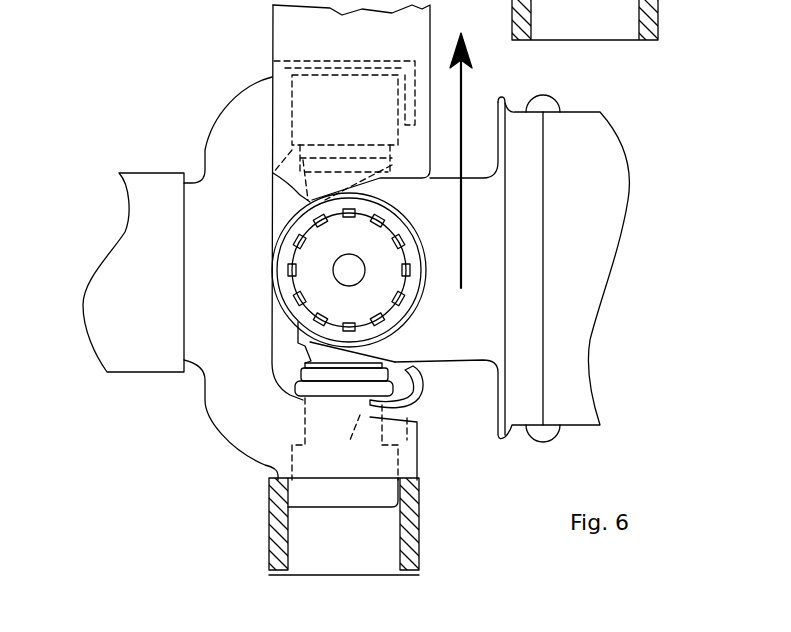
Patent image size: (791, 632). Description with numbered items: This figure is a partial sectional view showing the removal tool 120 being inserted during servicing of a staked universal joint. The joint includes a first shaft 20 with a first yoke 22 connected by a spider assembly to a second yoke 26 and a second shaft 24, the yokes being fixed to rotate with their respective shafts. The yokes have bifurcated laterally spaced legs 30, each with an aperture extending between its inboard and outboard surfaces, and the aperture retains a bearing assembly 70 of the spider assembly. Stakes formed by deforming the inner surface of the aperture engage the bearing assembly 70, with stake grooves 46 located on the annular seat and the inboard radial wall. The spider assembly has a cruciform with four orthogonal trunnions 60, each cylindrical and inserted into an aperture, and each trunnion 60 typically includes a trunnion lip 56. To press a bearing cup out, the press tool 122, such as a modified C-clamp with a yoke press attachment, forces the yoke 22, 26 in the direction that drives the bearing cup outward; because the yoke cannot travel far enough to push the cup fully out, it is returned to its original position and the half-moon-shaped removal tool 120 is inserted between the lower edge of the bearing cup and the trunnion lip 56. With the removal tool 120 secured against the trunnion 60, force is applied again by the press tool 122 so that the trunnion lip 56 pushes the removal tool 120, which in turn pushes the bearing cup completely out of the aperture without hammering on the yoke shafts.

The first shaft 20 is at (572, 298).
The first yoke 22 is at (470, 322).
The second shaft 24 is at (128, 228).
The second yoke 26 is at (233, 432).
The bifurcated laterally spaced legs 30 is at (490, 187).
The stake grooves 46 is at (302, 238).
The trunnion lip 56 is at (347, 400).
The trunnion 60 is at (305, 405).
The bearing assembly 70 is at (367, 500).
The removal tool 120 is at (418, 400).
The press tool 122 is at (273, 15).